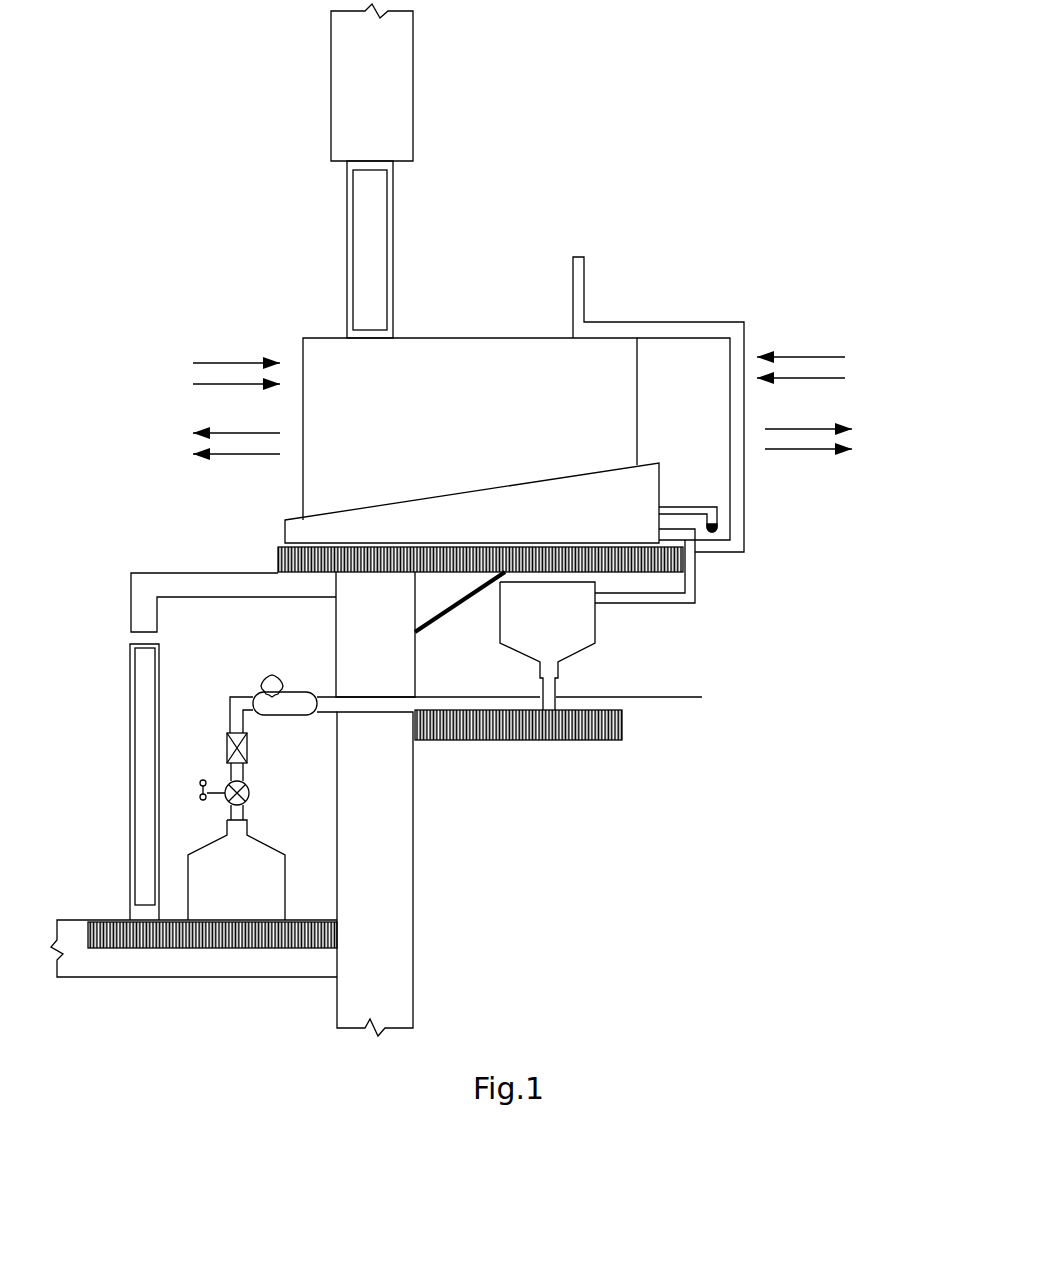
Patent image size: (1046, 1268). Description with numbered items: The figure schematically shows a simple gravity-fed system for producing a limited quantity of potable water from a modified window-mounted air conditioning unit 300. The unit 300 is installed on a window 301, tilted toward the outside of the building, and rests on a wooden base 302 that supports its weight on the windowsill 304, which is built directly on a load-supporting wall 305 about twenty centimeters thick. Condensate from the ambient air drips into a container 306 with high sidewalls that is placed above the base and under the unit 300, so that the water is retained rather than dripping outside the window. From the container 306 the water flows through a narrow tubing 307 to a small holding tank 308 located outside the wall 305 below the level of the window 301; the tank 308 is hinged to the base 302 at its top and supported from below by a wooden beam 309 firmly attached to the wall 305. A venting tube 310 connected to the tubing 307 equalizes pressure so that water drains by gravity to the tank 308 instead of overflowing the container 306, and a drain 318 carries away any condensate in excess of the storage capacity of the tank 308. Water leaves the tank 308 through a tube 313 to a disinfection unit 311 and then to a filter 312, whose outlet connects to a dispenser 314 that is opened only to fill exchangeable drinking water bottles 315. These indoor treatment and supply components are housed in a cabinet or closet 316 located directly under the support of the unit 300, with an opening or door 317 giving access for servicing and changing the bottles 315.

The unit 300 is at (466, 340).
The window 301 is at (393, 197).
The wooden base 302 is at (278, 559).
The windowsill 304 is at (365, 647).
The load-supporting wall 305 is at (413, 39).
The container 306 is at (307, 532).
The narrow tubing 307 is at (695, 580).
The small holding tank 308 is at (595, 637).
The wooden beam 309 is at (622, 730).
The venting tube 310 is at (584, 275).
The disinfection unit 311 is at (260, 685).
The filter 312 is at (227, 747).
The tube 313 is at (702, 697).
The dispenser 314 is at (200, 799).
The exchangeable drinking water bottles 315 is at (202, 893).
The cabinet or closet 316 is at (135, 599).
The opening or door 317 is at (130, 715).
The drain 318 is at (717, 521).